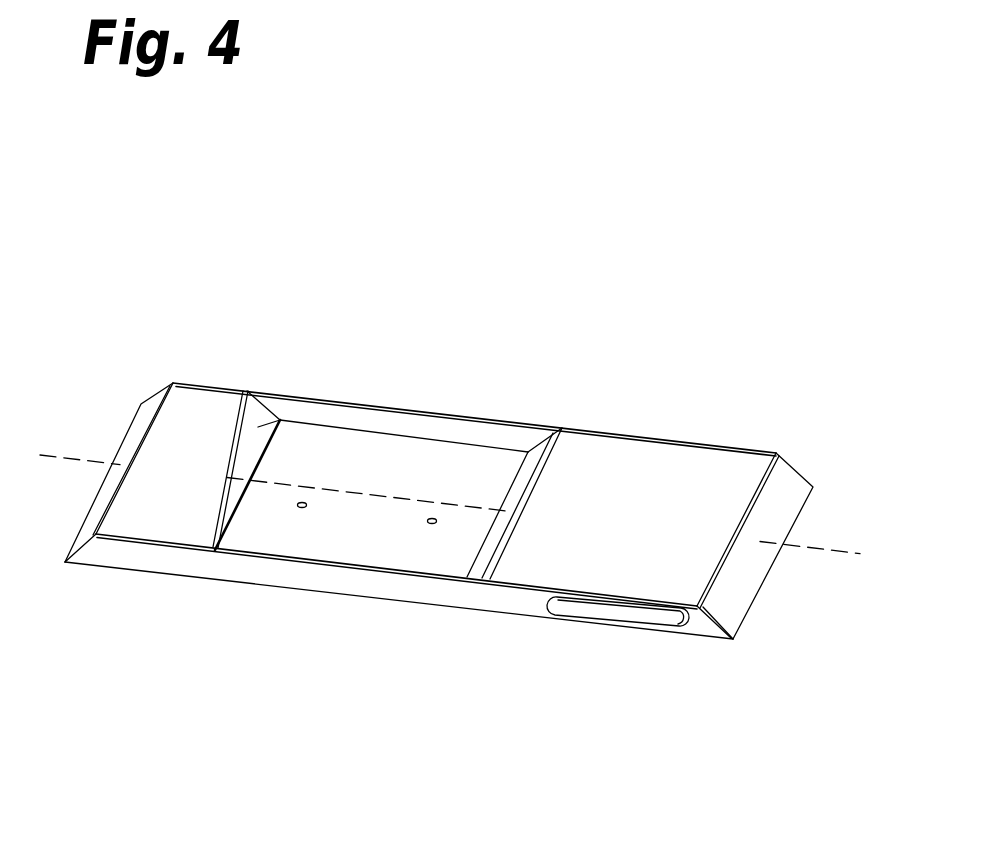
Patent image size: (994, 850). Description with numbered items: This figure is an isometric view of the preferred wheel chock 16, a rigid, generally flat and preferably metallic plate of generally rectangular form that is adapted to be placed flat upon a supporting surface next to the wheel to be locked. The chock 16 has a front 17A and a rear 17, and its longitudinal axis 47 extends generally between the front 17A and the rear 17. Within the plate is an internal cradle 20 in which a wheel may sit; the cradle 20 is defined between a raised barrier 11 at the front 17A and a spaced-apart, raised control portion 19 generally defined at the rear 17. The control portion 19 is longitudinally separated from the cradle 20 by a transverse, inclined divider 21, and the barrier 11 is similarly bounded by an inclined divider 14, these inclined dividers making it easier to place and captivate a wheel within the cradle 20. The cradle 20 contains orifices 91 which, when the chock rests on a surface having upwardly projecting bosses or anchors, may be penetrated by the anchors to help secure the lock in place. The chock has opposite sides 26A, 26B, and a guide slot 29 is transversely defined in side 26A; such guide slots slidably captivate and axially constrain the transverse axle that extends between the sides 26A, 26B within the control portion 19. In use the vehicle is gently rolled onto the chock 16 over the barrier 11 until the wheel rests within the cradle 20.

The raised barrier 11 is at (193, 412).
The inclined divider 14 is at (279, 419).
The chock 16 is at (214, 601).
The rear 17 is at (786, 606).
The front 17A is at (70, 512).
The control portion 19 is at (385, 458).
The cradle 20 is at (635, 467).
The inclined divider 21 is at (528, 477).
The chock side 26A is at (392, 585).
The chock side 26B is at (722, 443).
The guide slot 29 is at (613, 612).
The longitudinal axis 47 is at (62, 457).
The orifices 91 is at (305, 500).